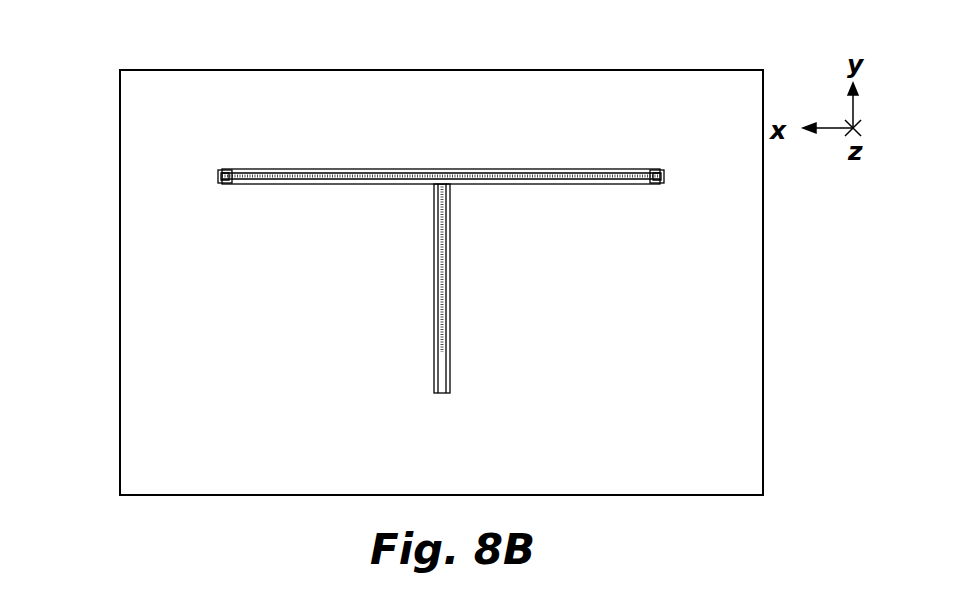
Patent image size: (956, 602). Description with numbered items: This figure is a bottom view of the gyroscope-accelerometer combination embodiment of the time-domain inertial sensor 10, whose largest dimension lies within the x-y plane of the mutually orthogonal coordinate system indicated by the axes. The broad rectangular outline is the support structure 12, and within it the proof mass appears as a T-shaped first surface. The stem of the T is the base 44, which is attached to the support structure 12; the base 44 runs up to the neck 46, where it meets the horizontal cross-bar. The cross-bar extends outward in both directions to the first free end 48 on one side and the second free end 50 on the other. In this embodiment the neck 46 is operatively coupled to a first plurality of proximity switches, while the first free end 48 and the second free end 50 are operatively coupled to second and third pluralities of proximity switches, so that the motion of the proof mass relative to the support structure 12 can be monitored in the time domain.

The time-domain inertial sensor 10 is at (80, 56).
The support structure 12 is at (763, 420).
The base 44 is at (440, 372).
The neck 46 is at (433, 186).
The first free end 48 is at (237, 186).
The second free end 50 is at (640, 186).